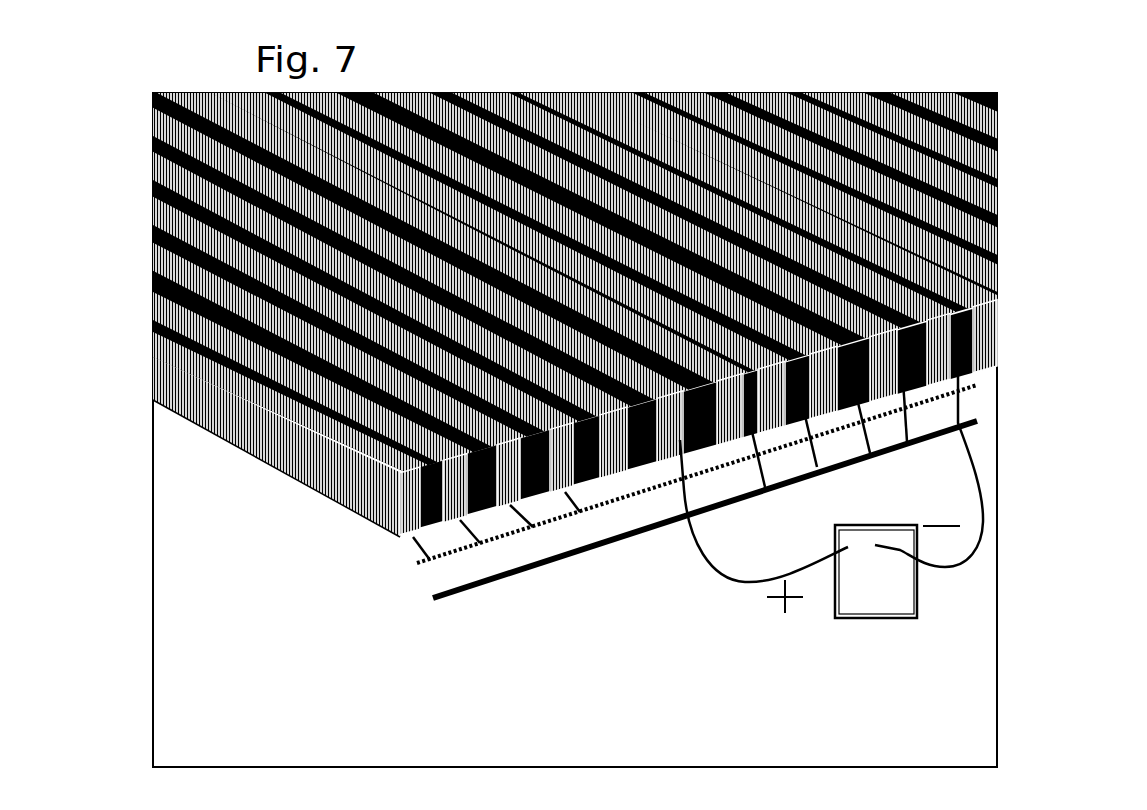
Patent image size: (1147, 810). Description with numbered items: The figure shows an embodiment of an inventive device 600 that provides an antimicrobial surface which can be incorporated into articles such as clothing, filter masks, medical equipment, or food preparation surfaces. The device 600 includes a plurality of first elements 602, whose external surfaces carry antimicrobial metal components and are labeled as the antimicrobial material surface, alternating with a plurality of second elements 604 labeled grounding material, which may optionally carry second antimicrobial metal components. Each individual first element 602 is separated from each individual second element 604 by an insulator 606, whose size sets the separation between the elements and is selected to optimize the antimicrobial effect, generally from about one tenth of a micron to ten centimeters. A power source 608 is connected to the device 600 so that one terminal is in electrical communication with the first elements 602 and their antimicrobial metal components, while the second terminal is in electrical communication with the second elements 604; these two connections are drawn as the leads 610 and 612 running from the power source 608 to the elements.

The device 600 is at (1012, 250).
The first elements 602 is at (560, 325).
The second elements 604 is at (590, 405).
The insulator 606 is at (318, 439).
The power source 608 is at (867, 620).
The positive wire 610 is at (718, 575).
The negative wire 612 is at (975, 467).